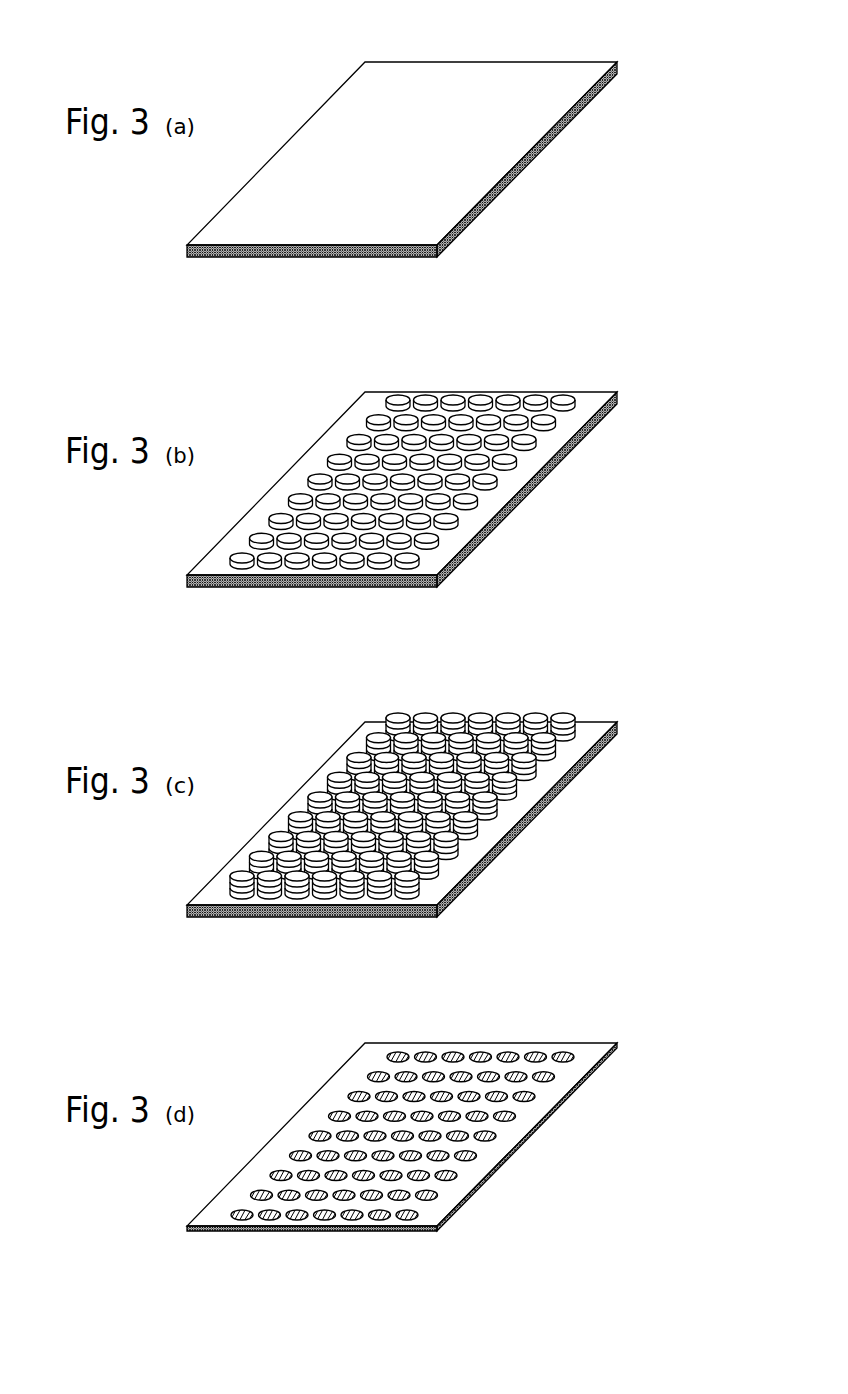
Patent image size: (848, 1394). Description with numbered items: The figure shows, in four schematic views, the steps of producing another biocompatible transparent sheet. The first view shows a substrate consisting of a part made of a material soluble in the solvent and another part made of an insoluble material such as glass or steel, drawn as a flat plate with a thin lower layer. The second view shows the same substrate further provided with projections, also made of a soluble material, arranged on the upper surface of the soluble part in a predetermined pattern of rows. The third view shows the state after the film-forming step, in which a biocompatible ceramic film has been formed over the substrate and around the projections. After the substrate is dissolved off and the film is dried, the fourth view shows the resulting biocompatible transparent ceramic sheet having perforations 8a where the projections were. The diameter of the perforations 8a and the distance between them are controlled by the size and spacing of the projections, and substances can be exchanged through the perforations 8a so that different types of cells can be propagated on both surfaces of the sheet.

The perforations 8a is at (498, 1135).